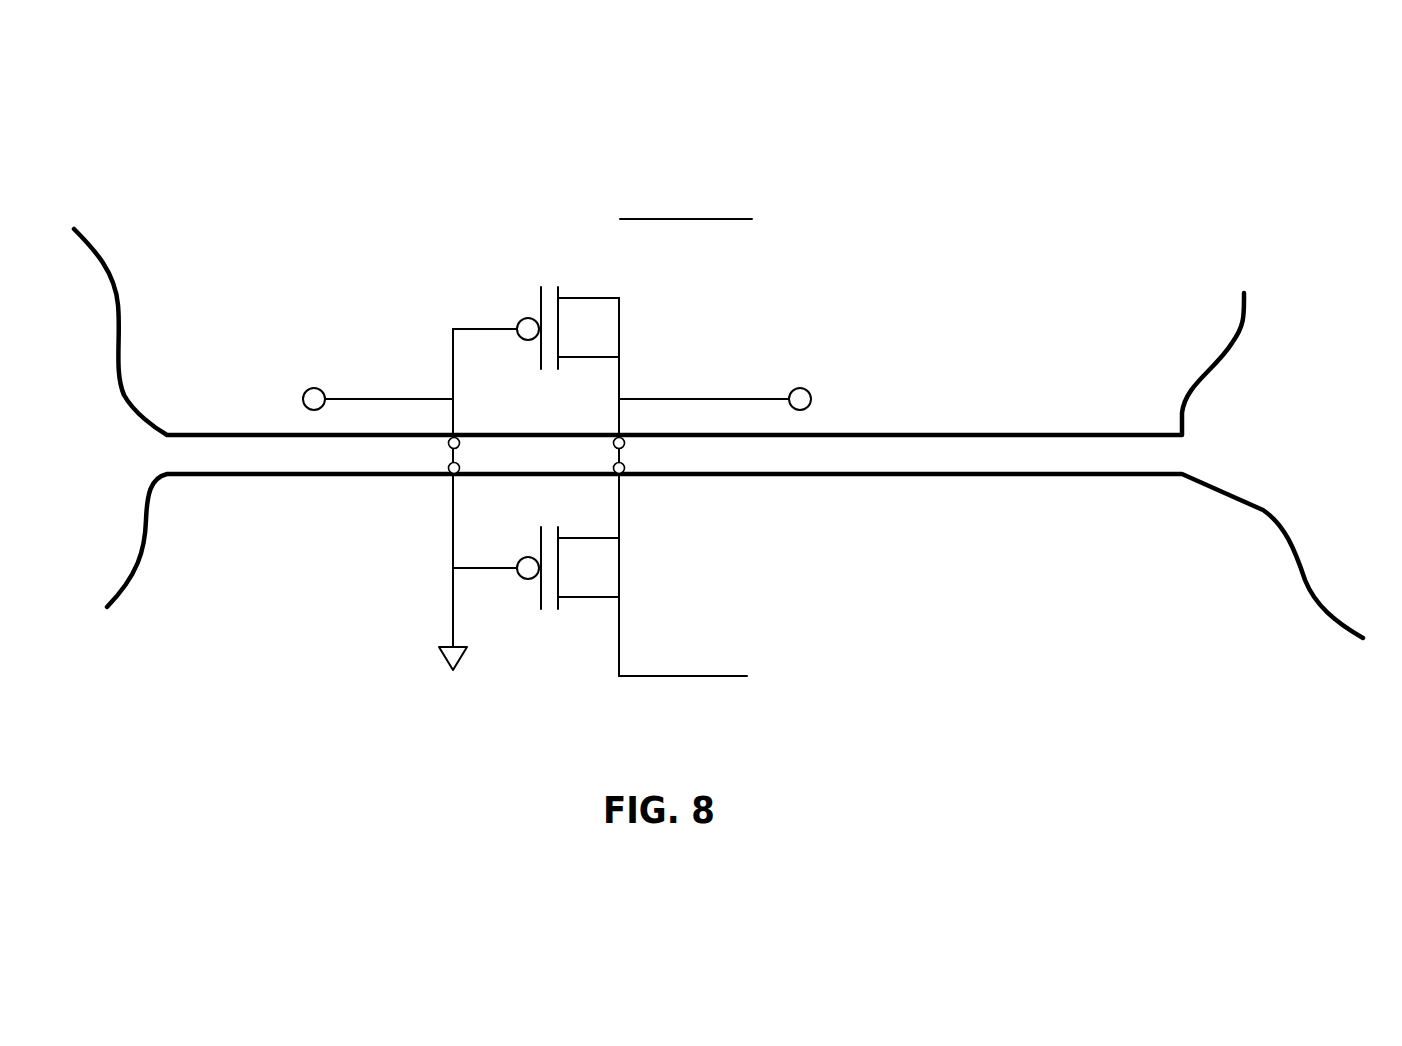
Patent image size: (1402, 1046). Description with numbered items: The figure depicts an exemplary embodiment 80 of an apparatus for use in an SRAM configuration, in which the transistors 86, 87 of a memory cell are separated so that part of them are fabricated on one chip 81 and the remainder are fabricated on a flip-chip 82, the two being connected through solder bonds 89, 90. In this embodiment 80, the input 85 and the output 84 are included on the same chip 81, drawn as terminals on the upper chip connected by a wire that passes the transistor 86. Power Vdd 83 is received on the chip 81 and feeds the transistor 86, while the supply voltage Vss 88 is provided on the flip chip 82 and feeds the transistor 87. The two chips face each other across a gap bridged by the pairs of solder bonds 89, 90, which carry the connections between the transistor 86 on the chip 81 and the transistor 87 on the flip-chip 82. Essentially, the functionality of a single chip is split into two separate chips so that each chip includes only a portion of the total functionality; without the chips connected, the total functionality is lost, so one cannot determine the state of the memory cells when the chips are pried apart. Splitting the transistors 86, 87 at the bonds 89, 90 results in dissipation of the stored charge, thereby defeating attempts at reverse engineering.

The embodiment of an apparatus for use in an SRAM configuration 80 is at (410, 227).
The chip 81 is at (1189, 352).
The flip-chip 82 is at (1260, 562).
The power Vdd 83 is at (807, 213).
The output terminal 84 is at (800, 388).
The input 85 is at (317, 388).
The transistor 86 is at (597, 325).
The transistor 87 is at (588, 565).
The supply voltage Vss 88 is at (805, 683).
The solder bond 89 is at (448, 443).
The solder bond 90 is at (625, 443).